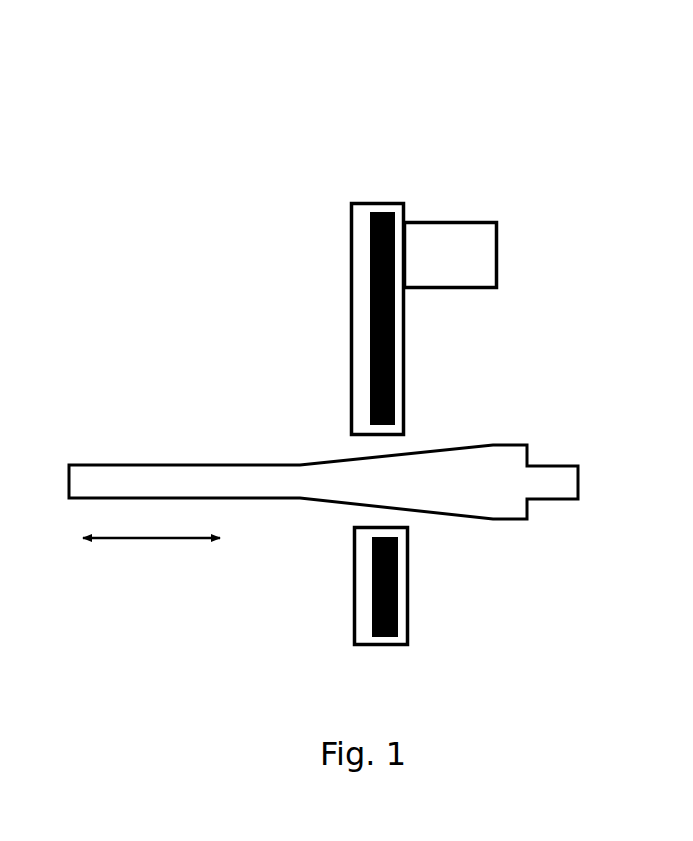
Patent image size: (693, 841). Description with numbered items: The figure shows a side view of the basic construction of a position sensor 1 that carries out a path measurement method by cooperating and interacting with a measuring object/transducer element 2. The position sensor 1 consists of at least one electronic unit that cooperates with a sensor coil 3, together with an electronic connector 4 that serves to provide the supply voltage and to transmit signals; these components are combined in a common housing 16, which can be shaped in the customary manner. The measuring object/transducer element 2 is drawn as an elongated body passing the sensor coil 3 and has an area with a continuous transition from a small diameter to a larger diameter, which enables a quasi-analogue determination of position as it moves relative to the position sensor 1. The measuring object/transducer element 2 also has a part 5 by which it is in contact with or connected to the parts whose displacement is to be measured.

The position sensor 1 is at (268, 317).
The measuring object/transducer element 2 is at (487, 498).
The sensor coil 3 is at (403, 222).
The electronic connector 4 is at (473, 243).
The part 5 is at (125, 477).
The housing 16 is at (350, 207).